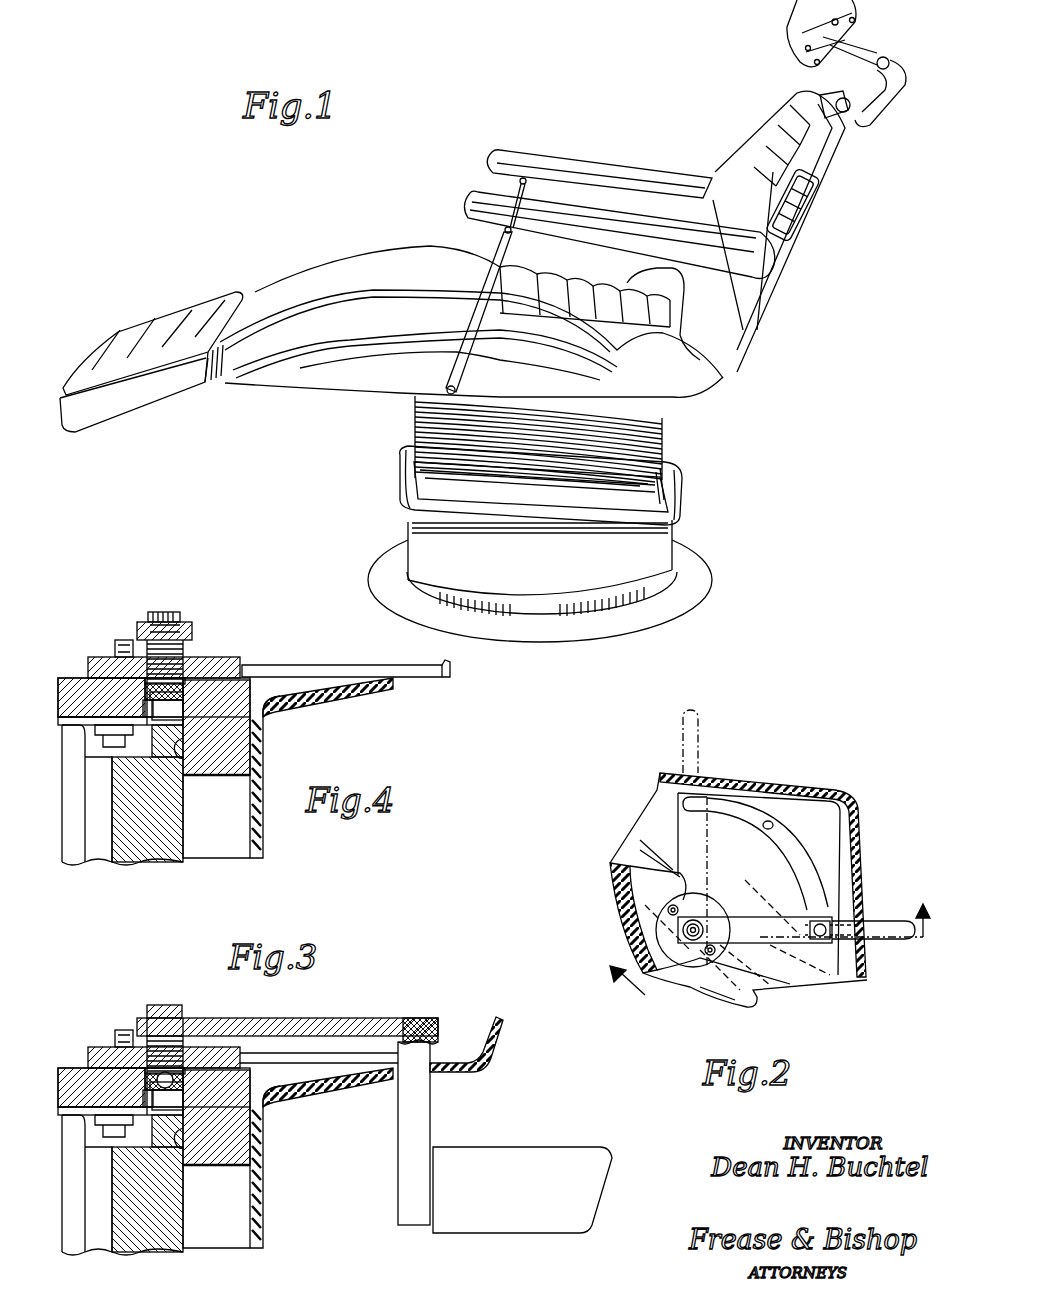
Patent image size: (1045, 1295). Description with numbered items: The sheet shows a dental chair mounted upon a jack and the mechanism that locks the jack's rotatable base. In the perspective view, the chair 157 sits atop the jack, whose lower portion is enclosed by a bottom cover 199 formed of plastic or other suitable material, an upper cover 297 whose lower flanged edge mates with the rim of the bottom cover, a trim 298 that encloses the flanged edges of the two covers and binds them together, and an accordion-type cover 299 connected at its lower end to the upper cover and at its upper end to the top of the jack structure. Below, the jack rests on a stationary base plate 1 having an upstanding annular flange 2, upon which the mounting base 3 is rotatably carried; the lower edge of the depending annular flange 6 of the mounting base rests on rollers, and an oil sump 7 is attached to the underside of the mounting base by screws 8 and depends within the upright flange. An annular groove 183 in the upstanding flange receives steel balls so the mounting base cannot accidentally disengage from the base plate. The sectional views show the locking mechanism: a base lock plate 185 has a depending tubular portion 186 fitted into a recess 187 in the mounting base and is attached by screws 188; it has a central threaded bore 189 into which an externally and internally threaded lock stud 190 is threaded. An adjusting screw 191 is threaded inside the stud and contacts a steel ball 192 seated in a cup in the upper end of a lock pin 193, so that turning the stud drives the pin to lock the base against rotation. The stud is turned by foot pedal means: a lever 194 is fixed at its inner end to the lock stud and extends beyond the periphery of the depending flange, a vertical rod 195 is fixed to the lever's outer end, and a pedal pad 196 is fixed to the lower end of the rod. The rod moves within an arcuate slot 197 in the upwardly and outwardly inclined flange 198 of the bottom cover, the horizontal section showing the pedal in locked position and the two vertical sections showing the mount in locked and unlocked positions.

In FIG. 1, the stationary base plate 1 is at (705, 555).
In FIG. 4, the upstanding annular flange 2 is at (183, 840).
In FIG. 3, the upstanding annular flange 2 is at (216, 1221).
In FIG. 4, the mounting base 3 is at (65, 678).
In FIG. 3, the mounting base 3 is at (147, 1067).
In FIG. 2, the mounting base 3 is at (745, 1005).
In FIG. 4, the depending annular flange 6 is at (228, 760).
In FIG. 3, the depending annular flange 6 is at (245, 1117).
In FIG. 4, the oil sump 7 is at (72, 850).
In FIG. 3, the oil sump 7 is at (118, 1199).
In FIG. 4, the screws 8 is at (110, 747).
In FIG. 3, the screws 8 is at (112, 1153).
In FIG. 1, the chair 157 is at (713, 380).
In FIG. 4, the annular groove 183 is at (183, 748).
In FIG. 3, the annular groove 183 is at (204, 1167).
In FIG. 4, the base lock plate 185 is at (95, 657).
In FIG. 3, the base lock plate 185 is at (147, 1026).
In FIG. 2, the base lock plate 185 is at (710, 903).
In FIG. 4, the depending tubular portion 186 is at (185, 688).
In FIG. 3, the depending tubular portion 186 is at (274, 1071).
In FIG. 4, the recess 187 is at (183, 705).
In FIG. 3, the recess 187 is at (229, 1106).
In FIG. 4, the screws 188 is at (122, 640).
In FIG. 3, the screws 188 is at (116, 1014).
In FIG. 2, the screws 188 is at (668, 910).
In FIG. 4, the threaded bore 189 is at (185, 680).
In FIG. 3, the threaded bore 189 is at (203, 1034).
In FIG. 4, the lock stud 190 is at (172, 660).
In FIG. 3, the lock stud 190 is at (183, 1037).
In FIG. 2, the lock stud 190 is at (683, 931).
In FIG. 4, the adjusting screw 191 is at (160, 622).
In FIG. 3, the adjusting screw 191 is at (163, 1005).
In FIG. 4, the steel ball 192 is at (150, 705).
In FIG. 3, the steel ball 192 is at (112, 1093).
In FIG. 4, the lock pin 193 is at (160, 740).
In FIG. 3, the lock pin 193 is at (147, 1183).
In FIG. 4, the lever 194 is at (185, 628).
In FIG. 3, the lever 194 is at (355, 1018).
In FIG. 2, the lever 194 is at (660, 830).
In FIG. 3, the vertical rod 195 is at (420, 1103).
In FIG. 2, the vertical rod 195 is at (836, 960).
In FIG. 3, the pedal pad 196 is at (500, 1160).
In FIG. 2, the pedal pad 196 is at (680, 728).
In FIG. 4, the arcuate slot 197 is at (440, 678).
In FIG. 3, the arcuate slot 197 is at (346, 1098).
In FIG. 2, the arcuate slot 197 is at (775, 822).
In FIG. 4, the inclined flange 198 is at (355, 695).
In FIG. 3, the inclined flange 198 is at (450, 1050).
In FIG. 2, the inclined flange 198 is at (832, 845).
In FIG. 1, the bottom cover 199 is at (443, 545).
In FIG. 4, the bottom cover 199 is at (262, 845).
In FIG. 3, the bottom cover 199 is at (287, 1167).
In FIG. 2, the bottom cover 199 is at (750, 778).
In FIG. 1, the upper cover 297 is at (665, 478).
In FIG. 1, the trim 298 is at (680, 503).
In FIG. 1, the accordion-type cover 299 is at (415, 432).